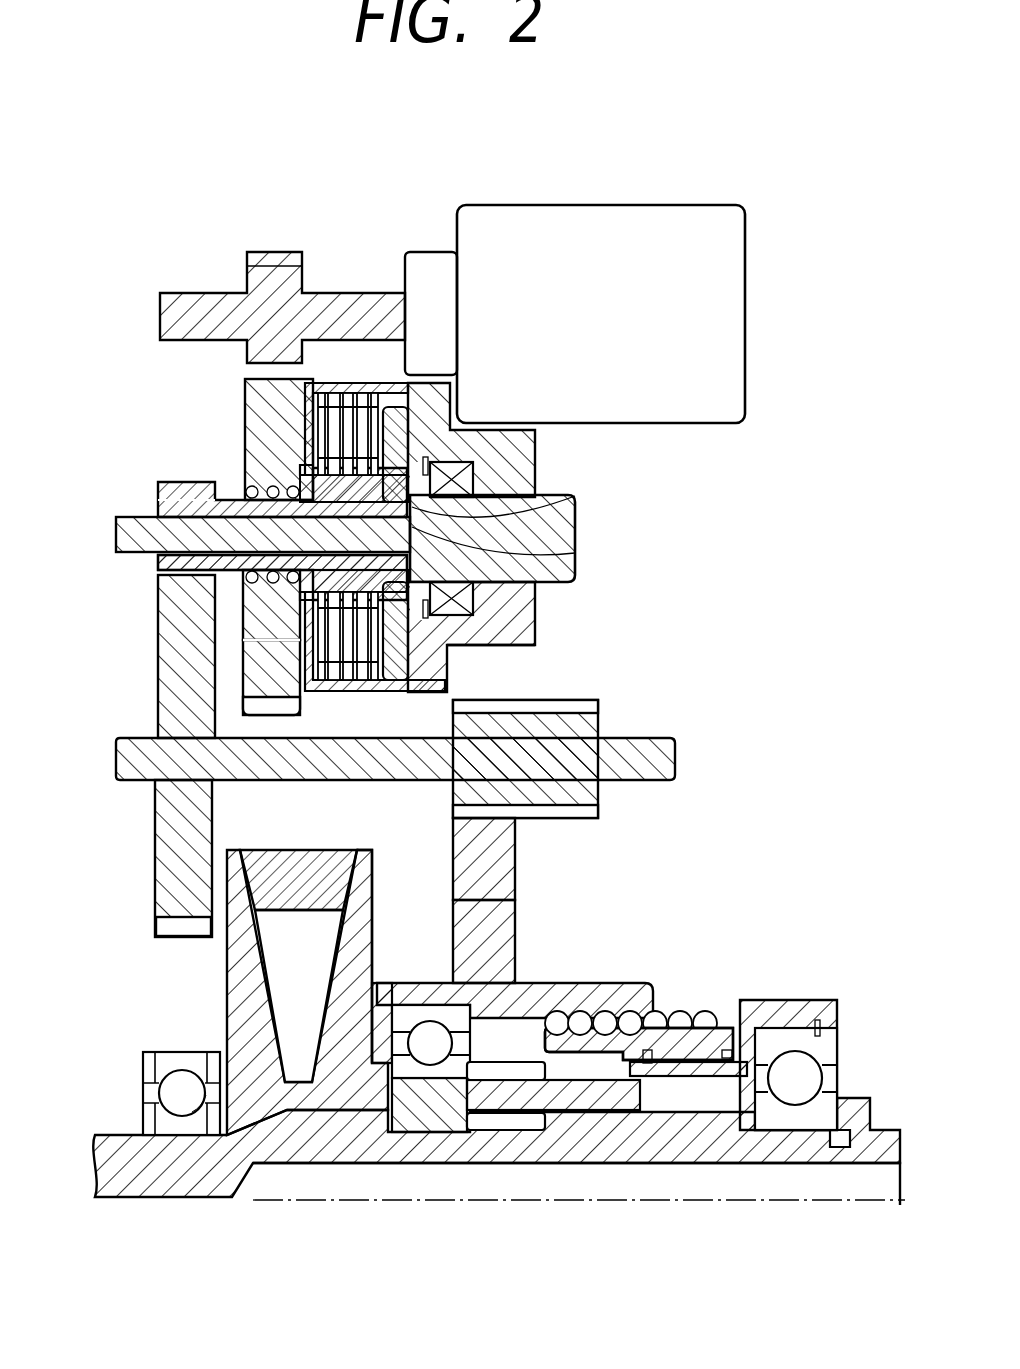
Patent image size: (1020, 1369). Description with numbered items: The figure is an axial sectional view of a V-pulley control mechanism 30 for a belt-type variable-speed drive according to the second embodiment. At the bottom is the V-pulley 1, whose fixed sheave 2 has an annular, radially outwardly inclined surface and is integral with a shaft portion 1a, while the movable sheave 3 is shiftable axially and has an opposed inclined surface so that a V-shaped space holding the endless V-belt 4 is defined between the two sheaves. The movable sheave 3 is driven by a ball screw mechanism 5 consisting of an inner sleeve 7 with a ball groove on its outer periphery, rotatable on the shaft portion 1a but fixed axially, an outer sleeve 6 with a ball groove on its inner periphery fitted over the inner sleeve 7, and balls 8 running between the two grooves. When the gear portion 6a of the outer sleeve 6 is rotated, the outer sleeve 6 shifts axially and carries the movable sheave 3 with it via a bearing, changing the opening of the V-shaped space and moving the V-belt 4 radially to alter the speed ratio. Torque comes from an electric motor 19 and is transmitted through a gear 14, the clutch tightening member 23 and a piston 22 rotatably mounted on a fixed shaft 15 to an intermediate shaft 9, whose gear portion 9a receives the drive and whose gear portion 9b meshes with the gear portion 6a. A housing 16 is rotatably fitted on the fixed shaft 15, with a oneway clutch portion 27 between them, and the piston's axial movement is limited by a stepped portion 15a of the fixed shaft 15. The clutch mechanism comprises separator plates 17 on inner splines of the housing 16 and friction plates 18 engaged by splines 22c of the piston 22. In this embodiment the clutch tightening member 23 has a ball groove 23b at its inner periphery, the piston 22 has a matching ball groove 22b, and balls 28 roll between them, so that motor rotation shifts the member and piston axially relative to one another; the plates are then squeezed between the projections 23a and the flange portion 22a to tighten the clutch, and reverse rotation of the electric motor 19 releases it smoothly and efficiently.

The V-pulley 1 is at (182, 1012).
The shaft portion 1a is at (702, 1158).
The fixed sheave 2 is at (266, 970).
The movable sheave 3 is at (363, 925).
The V-belt 4 is at (290, 852).
The ball screw mechanism 5 is at (680, 992).
The outer sleeve 6 is at (515, 905).
The gear portion 6a is at (493, 847).
The inner sleeve 7 is at (690, 1035).
The balls 8 is at (588, 1010).
The intermediate shaft 9 is at (677, 757).
The gear portion 9a is at (172, 612).
The gear portion 9b is at (598, 706).
The gear 14 is at (247, 284).
The fixed shaft 15 is at (557, 523).
The stepped portion 15a is at (572, 498).
The housing 16 is at (537, 455).
The separator plates 17 is at (320, 398).
The friction plates 18 is at (337, 417).
The electric motor 19 is at (745, 318).
The piston 22 is at (220, 487).
The flange portion 22a is at (395, 410).
The ball groove 22b is at (175, 560).
The splines 22c is at (415, 528).
The clutch tightening member 23 is at (250, 412).
The projections 23a is at (260, 675).
The ball groove 23b is at (260, 610).
The oneway clutch portion 27 is at (487, 647).
The balls 28 is at (246, 488).
The V-pulley control mechanism 30 is at (690, 600).